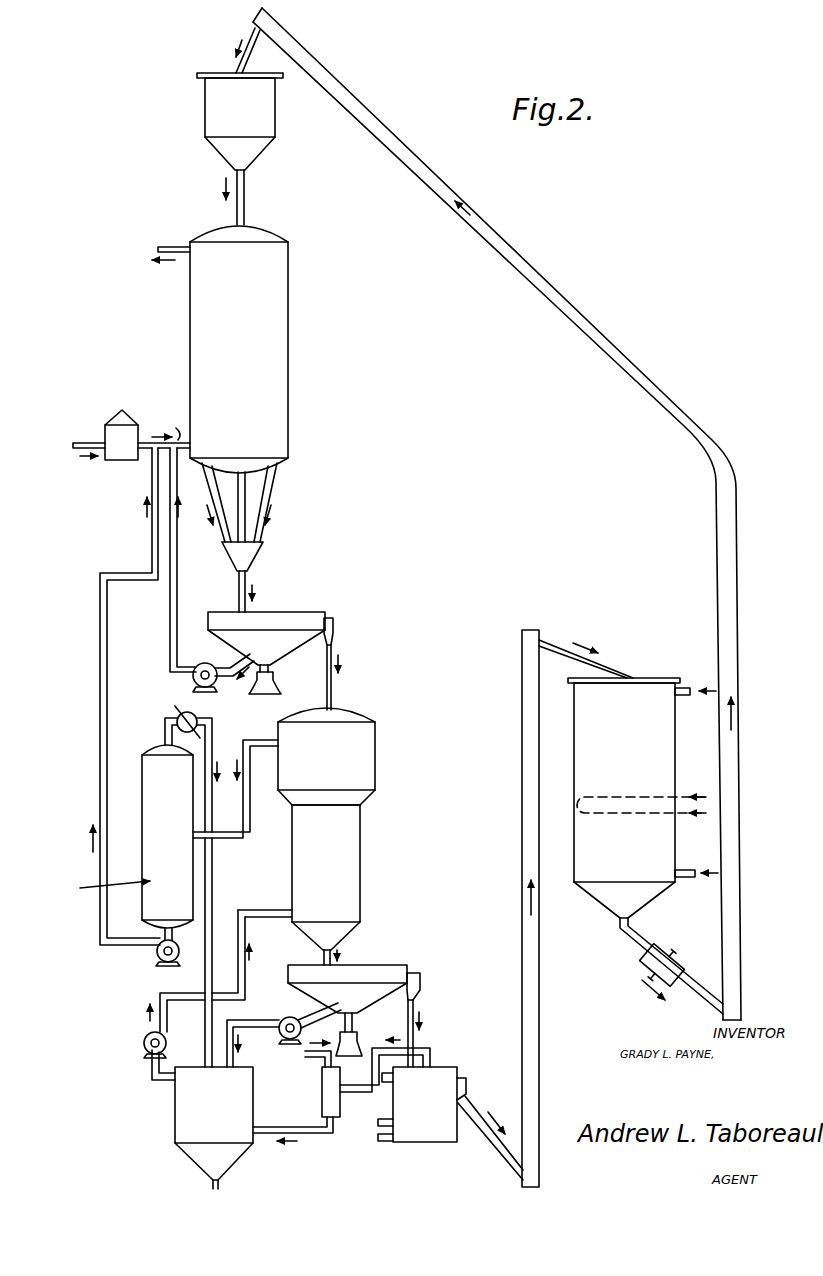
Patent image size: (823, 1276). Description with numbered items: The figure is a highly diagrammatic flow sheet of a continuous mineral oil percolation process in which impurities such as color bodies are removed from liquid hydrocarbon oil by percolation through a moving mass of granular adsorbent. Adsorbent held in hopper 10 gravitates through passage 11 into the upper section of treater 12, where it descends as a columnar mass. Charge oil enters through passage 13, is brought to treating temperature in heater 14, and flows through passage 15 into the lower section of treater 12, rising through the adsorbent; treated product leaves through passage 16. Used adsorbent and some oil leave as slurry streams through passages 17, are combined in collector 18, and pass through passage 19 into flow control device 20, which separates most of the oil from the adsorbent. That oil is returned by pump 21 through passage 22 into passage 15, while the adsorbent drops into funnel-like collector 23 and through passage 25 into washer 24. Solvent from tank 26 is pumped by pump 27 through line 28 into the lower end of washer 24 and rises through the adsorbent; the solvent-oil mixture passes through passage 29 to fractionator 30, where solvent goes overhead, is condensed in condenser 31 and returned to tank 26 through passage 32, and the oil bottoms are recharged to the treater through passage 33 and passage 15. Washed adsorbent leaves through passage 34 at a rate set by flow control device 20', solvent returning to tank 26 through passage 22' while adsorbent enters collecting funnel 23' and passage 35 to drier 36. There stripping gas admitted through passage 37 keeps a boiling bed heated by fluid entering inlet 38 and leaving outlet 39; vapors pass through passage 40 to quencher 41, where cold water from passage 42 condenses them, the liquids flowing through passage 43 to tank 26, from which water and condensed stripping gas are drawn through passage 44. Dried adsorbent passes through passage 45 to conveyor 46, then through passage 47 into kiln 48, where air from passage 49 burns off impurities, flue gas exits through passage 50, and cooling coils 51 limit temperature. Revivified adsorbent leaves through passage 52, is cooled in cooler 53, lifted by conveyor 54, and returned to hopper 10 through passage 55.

The hopper 10 is at (210, 118).
The passage 11 is at (245, 193).
The treater 12 is at (272, 281).
The passage 13 is at (81, 444).
The heater 14 is at (132, 405).
The passage 15 is at (164, 429).
The passage 16 is at (172, 247).
The passages 17 is at (238, 482).
The collector 18 is at (246, 556).
The passage 19 is at (246, 605).
The flow control device 20 is at (279, 641).
The pump 21 is at (214, 659).
The passage 22 is at (160, 560).
The funnel-like collector 23 is at (350, 631).
The washer 24 is at (367, 731).
The passage 25 is at (332, 686).
The tank 26 is at (175, 1117).
The pump 27 is at (144, 1043).
The line 28 is at (264, 900).
The passage 29 is at (246, 740).
The fractionator 30 is at (152, 797).
The condenser 31 is at (194, 883).
The passage 32 is at (210, 991).
The passage 33 is at (100, 657).
The passage 34 is at (324, 955).
The passage 35 is at (414, 1037).
The drier 36 is at (425, 1135).
The passage 37 is at (383, 1140).
The inlet 38 is at (382, 1121).
The outlet 39 is at (395, 1078).
The passage 40 is at (365, 1052).
The quencher 41 is at (322, 1088).
The passage 42 is at (310, 1058).
The passage 43 is at (306, 1120).
The passage 44 is at (212, 1186).
The passage 45 is at (499, 1143).
The conveyor 46 is at (540, 1082).
The passage 47 is at (624, 666).
The kiln 48 is at (657, 745).
The passage 49 is at (697, 858).
The passage 50 is at (697, 676).
The cooling coils 51 is at (686, 797).
The passage 52 is at (634, 940).
The cooler 53 is at (698, 951).
The conveyor 54 is at (742, 566).
The passage 55 is at (231, 64).
The flow control device 20' is at (347, 997).
The passage 22' is at (284, 1029).
The collecting funnel 23' is at (435, 986).